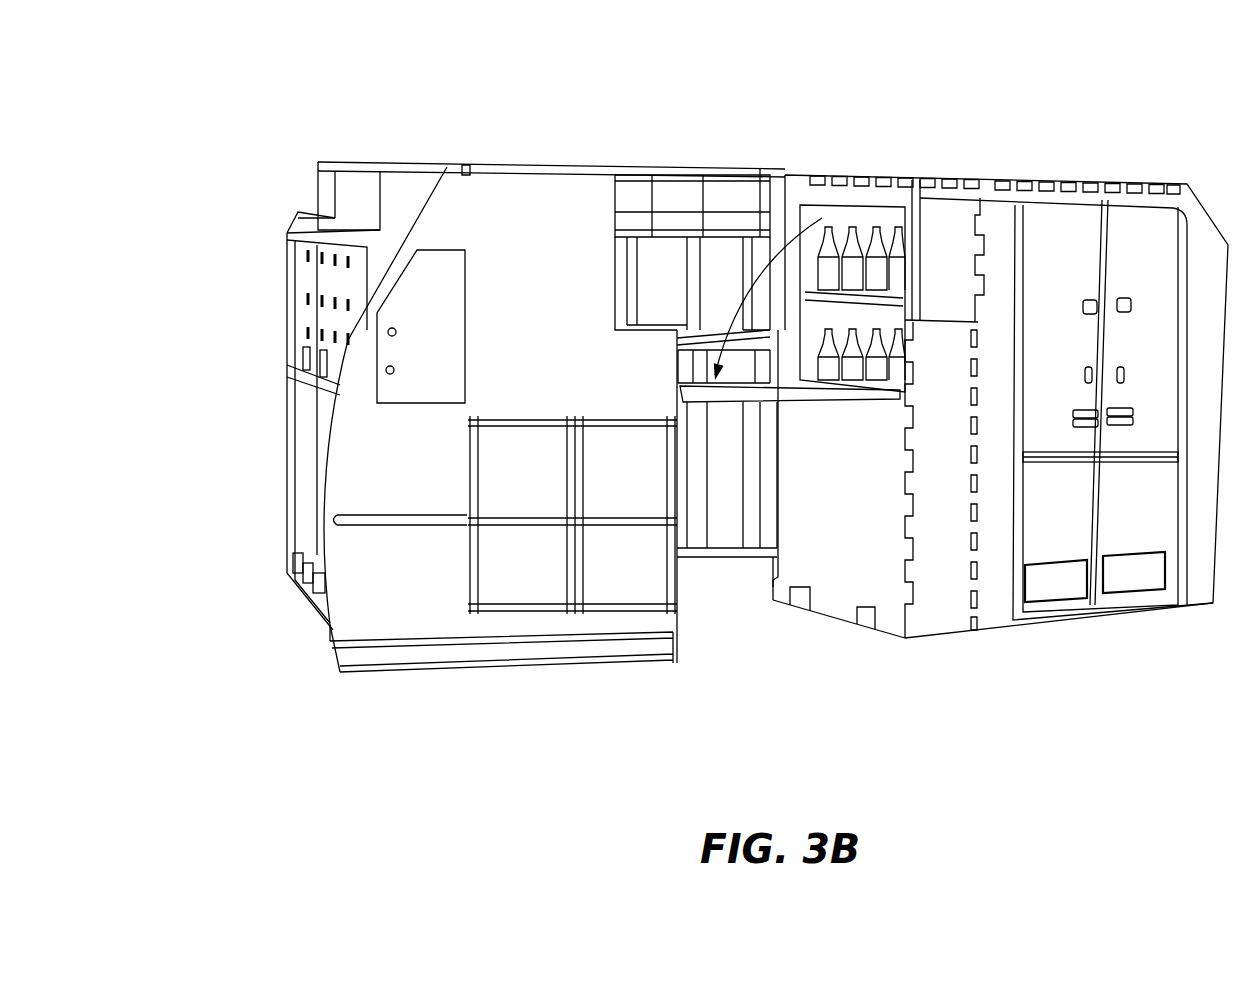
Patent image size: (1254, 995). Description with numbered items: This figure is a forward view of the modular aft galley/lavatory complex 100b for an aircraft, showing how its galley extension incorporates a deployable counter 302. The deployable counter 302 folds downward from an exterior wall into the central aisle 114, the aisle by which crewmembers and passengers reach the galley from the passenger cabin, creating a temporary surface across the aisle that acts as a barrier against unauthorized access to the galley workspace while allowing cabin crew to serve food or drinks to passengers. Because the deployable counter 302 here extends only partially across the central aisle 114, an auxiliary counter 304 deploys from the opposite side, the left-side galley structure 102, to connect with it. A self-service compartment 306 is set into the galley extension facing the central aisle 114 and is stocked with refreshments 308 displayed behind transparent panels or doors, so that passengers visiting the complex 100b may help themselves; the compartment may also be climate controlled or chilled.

The aft galley/lavatory complex 100b is at (230, 60).
The left-side galley structure 102 is at (373, 148).
The central aisle 114 is at (757, 640).
The deployable counter 302 is at (783, 395).
The auxiliary counter 304 is at (692, 390).
The self-service compartment 306 is at (836, 220).
The refreshments 308 is at (888, 247).